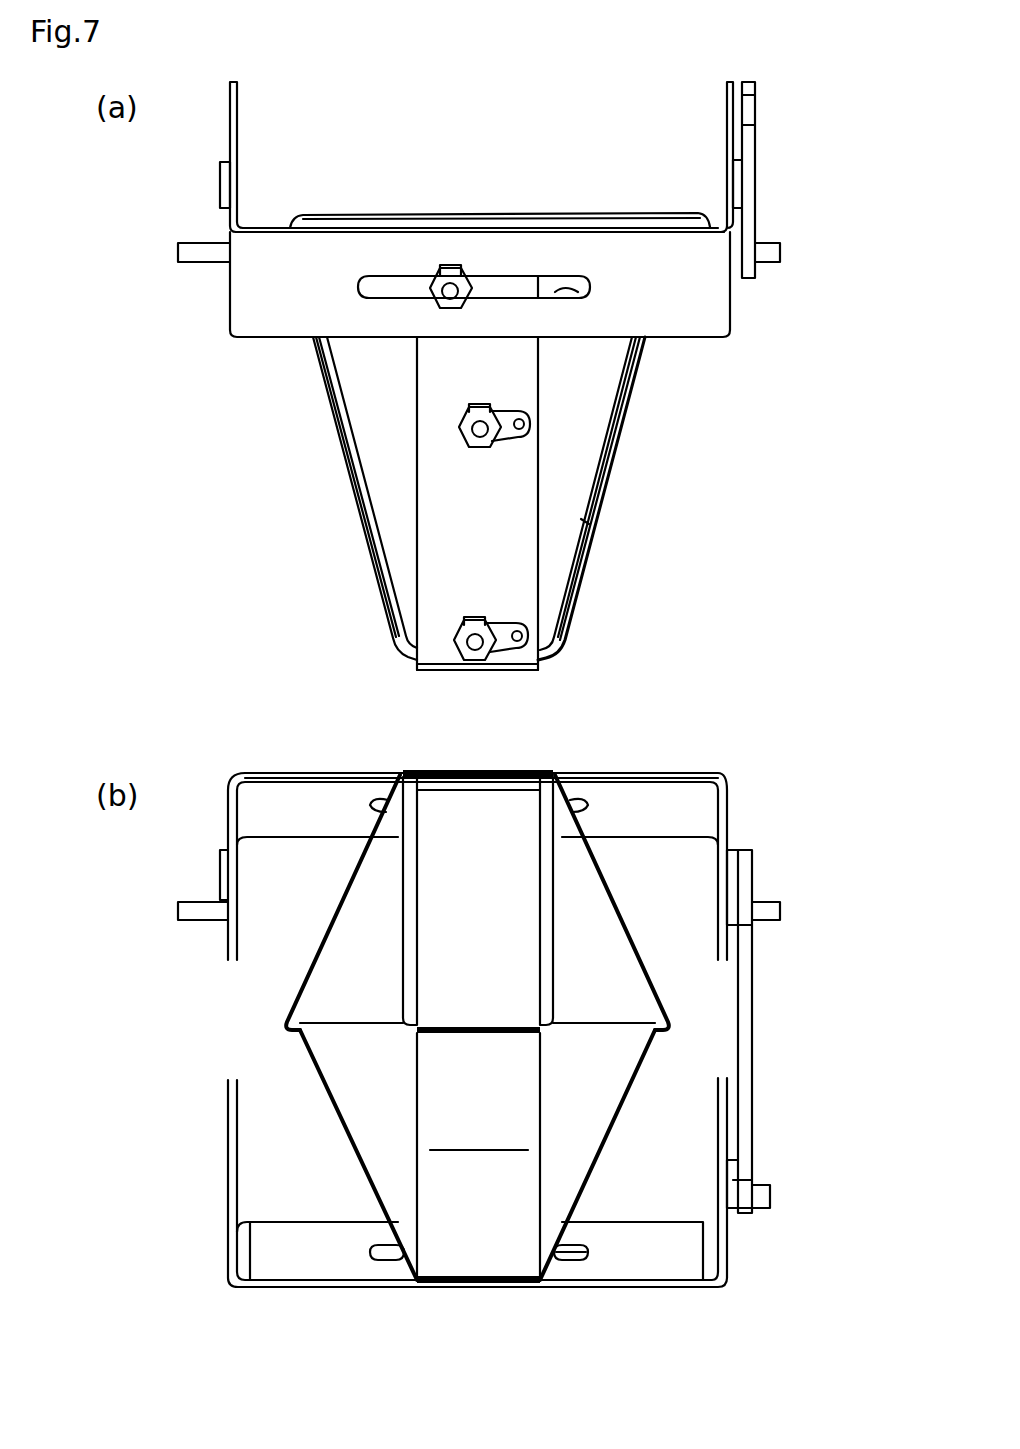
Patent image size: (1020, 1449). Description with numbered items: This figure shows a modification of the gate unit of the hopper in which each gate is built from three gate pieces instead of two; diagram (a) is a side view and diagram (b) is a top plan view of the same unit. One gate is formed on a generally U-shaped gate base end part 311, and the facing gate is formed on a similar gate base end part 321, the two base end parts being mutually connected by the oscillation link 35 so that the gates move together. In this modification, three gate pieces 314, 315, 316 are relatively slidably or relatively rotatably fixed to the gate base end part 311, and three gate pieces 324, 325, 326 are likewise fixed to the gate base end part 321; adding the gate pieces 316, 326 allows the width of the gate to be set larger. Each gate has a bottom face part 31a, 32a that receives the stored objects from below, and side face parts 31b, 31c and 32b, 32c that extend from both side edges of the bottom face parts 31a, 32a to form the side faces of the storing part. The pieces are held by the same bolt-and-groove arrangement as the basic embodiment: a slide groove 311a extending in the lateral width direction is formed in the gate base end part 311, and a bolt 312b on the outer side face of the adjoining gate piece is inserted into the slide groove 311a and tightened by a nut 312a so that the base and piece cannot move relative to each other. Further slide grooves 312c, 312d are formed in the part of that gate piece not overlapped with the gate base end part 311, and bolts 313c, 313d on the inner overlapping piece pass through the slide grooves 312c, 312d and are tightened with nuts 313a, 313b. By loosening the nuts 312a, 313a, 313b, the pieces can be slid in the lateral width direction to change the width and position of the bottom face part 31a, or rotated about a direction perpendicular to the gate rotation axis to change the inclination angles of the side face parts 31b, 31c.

The gate base end part 311 is at (258, 228).
The slide groove 311a is at (565, 290).
The nut 312a is at (452, 270).
The bolt 312b is at (445, 272).
The slide groove 312c is at (497, 408).
The slide groove 312d is at (510, 620).
The nut 313a is at (522, 422).
The nut 313b is at (505, 652).
The bolt 313c is at (478, 447).
The bolt 313d is at (477, 660).
The bottom face part 31a is at (518, 540).
The side face part 31b is at (584, 420).
The side face part 31c is at (365, 475).
The bottom face part 32a is at (462, 975).
The side face part 32b is at (345, 420).
The side face part 32c is at (642, 393).
The gate base end part 321 is at (320, 773).
The gate piece 324 is at (612, 478).
The gate piece 325 is at (378, 590).
The gate piece 326 is at (475, 772).
The gate piece 314 is at (372, 538).
The gate piece 315 is at (596, 530).
The gate piece 316 is at (417, 665).
The oscillation link 35 is at (757, 148).